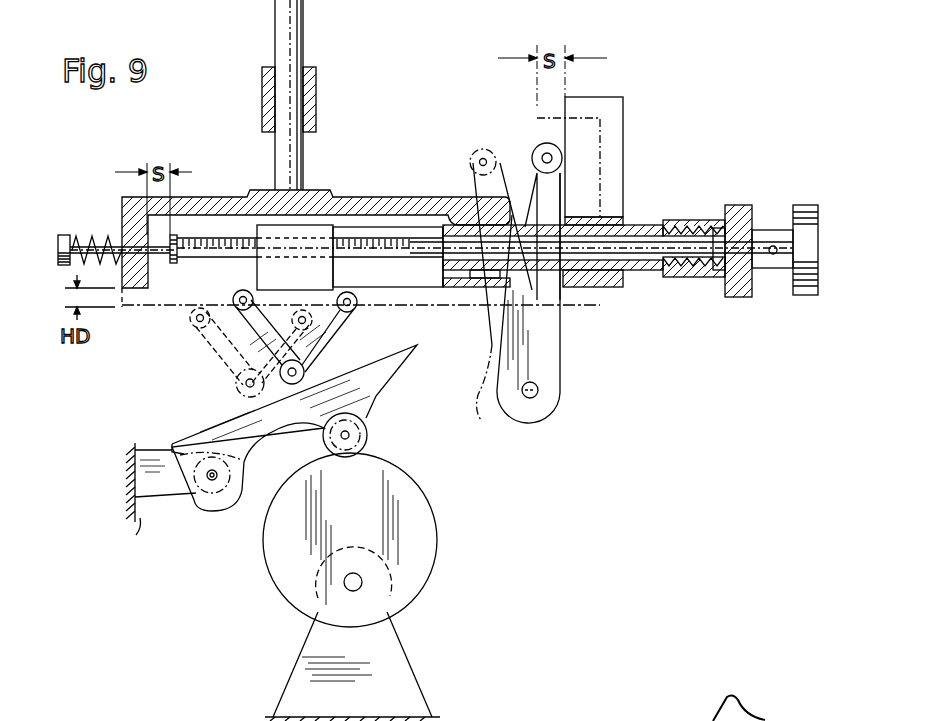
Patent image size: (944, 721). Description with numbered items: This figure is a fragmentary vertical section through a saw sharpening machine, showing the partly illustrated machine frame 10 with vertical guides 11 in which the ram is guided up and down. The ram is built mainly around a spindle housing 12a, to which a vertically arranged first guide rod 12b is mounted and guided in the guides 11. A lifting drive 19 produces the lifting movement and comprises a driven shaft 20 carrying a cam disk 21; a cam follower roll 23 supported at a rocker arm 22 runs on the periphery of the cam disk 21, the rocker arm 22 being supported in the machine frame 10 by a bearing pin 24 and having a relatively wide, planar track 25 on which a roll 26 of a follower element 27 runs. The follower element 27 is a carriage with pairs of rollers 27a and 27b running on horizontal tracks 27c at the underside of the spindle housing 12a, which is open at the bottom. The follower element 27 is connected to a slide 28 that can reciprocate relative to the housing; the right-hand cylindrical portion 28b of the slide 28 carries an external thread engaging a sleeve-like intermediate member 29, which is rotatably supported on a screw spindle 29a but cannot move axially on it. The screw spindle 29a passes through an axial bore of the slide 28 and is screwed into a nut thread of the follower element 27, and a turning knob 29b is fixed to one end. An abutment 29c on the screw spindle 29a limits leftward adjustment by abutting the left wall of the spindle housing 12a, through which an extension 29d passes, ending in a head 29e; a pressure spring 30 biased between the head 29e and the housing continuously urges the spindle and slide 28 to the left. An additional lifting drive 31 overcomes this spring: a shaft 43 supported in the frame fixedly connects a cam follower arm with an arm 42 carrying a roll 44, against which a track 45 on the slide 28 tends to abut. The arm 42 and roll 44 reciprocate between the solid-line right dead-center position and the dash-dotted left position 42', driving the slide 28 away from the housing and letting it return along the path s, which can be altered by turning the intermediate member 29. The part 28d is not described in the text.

The machine frame 10 is at (142, 506).
The vertical guides 11 is at (317, 115).
The spindle housing 12a is at (366, 197).
The first guide rod 12b is at (296, 36).
The lifting drive 19 is at (257, 603).
The driven shaft 20 is at (362, 582).
The cam disk 21 is at (430, 525).
The rocker arm 22 is at (388, 370).
The cam follower roll 23 is at (368, 438).
The bearing pin 24 is at (212, 481).
The track 25 is at (176, 445).
The roll 26 is at (306, 372).
The follower element 27 is at (240, 375).
The rollers 27a is at (351, 308).
The rollers 27b is at (215, 336).
The horizontal tracks 27c is at (410, 290).
The slide 28 is at (622, 222).
The cylindrical portion 28b is at (663, 222).
The roller 28d is at (456, 225).
The intermediate member 29 is at (740, 298).
The screw spindle 29a is at (214, 236).
The turning knob 29b is at (806, 212).
The abutment 29c is at (172, 266).
The extension 29d is at (108, 240).
The head 29e is at (62, 266).
The pressure spring 30 is at (90, 233).
The additional lifting drive 31 is at (592, 387).
The arm 42 is at (537, 293).
The lever phantom position 42' is at (480, 393).
The shaft 43 is at (538, 395).
The roll 44 is at (533, 157).
The track 45 is at (566, 100).